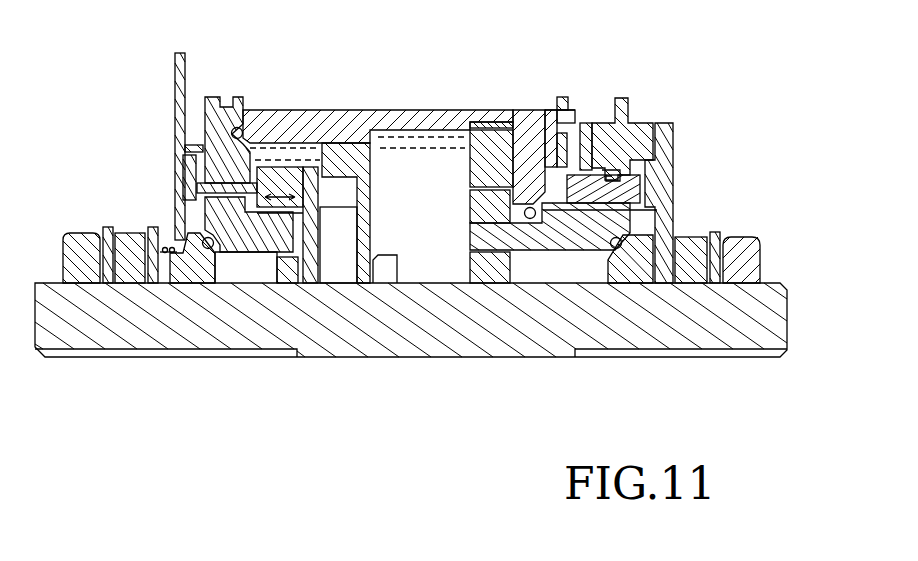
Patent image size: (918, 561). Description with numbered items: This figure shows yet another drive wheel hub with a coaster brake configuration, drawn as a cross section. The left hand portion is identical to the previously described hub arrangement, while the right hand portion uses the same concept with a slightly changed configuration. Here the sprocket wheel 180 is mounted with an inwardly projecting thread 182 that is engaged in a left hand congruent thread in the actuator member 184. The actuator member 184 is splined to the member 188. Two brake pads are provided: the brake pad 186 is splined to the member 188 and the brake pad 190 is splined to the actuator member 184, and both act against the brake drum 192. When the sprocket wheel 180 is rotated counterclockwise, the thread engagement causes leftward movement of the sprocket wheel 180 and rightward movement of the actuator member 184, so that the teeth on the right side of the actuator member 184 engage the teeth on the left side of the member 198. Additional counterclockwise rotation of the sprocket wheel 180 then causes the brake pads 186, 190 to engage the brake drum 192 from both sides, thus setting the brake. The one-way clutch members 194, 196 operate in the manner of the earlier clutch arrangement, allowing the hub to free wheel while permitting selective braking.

The sprocket wheel 180 is at (628, 102).
The inwardly projecting thread 182 is at (620, 178).
The actuator member 184 is at (628, 195).
The brake pad 186 is at (555, 168).
The member 188 is at (590, 233).
The brake pad 190 is at (587, 123).
The brake drum 192 is at (573, 115).
The one-way clutch member 194 is at (482, 193).
The one-way clutch member 196 is at (473, 268).
The member 198 is at (672, 137).